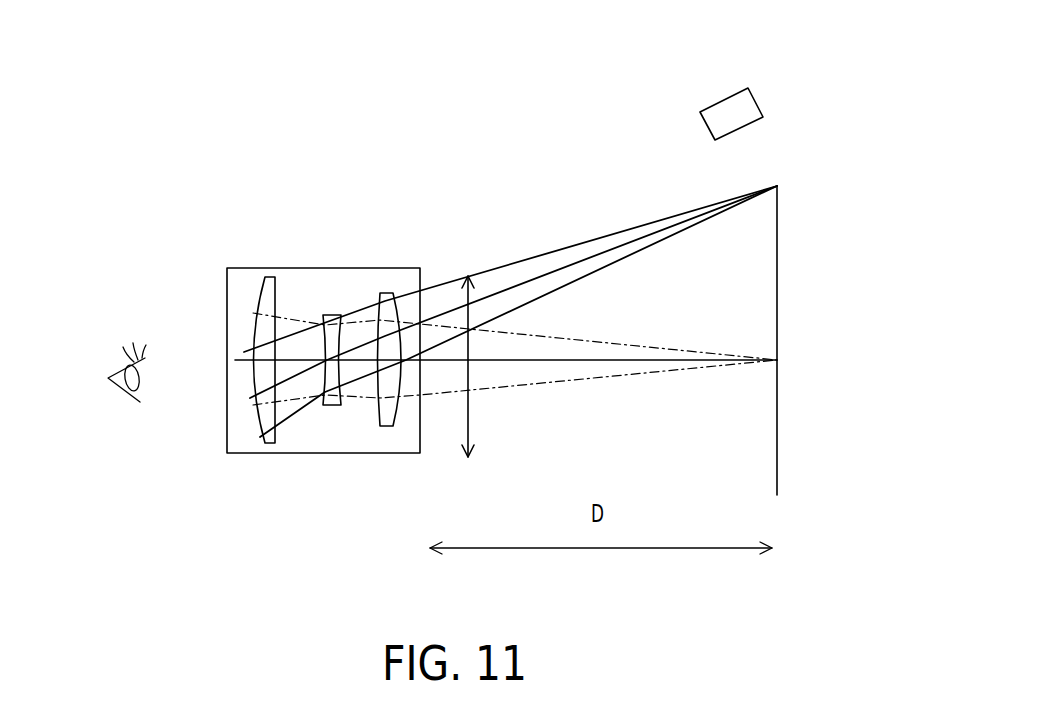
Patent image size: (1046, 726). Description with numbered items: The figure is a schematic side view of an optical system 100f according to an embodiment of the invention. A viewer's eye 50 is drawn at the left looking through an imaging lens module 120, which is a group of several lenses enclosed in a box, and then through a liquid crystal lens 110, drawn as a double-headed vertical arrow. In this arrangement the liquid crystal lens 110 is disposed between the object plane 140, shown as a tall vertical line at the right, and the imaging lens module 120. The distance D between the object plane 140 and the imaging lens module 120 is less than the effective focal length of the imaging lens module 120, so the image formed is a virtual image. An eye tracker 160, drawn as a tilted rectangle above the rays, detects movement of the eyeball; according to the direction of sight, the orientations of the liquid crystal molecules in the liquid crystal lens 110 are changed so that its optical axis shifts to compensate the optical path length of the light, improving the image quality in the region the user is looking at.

The eye of viewer 50 is at (123, 363).
The optical system 100f is at (790, 612).
The liquid crystal lens 110 is at (470, 348).
The imaging lens module 120 is at (323, 268).
The object plane 140 is at (780, 223).
The eye tracker 160 is at (722, 101).